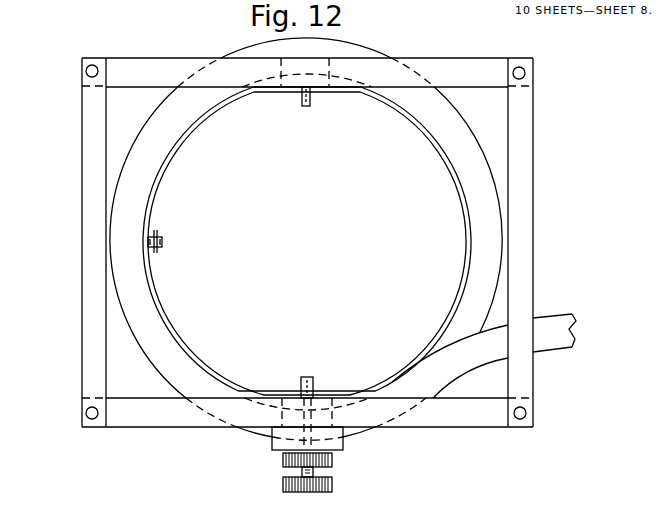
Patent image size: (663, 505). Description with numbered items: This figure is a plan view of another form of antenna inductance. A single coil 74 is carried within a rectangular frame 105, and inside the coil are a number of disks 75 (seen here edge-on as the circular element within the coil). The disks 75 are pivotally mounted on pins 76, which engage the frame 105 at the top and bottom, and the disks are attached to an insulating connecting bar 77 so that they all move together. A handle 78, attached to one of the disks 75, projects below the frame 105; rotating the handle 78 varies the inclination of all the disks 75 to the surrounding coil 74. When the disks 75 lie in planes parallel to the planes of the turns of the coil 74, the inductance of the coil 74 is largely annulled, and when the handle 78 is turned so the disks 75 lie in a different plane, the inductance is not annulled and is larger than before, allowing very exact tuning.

The frame 105 is at (457, 63).
The coil 74 is at (473, 175).
The disk 75 is at (330, 222).
The pin 76 is at (304, 83).
The insulating connecting bar 77 is at (148, 240).
The handle 78 is at (335, 487).